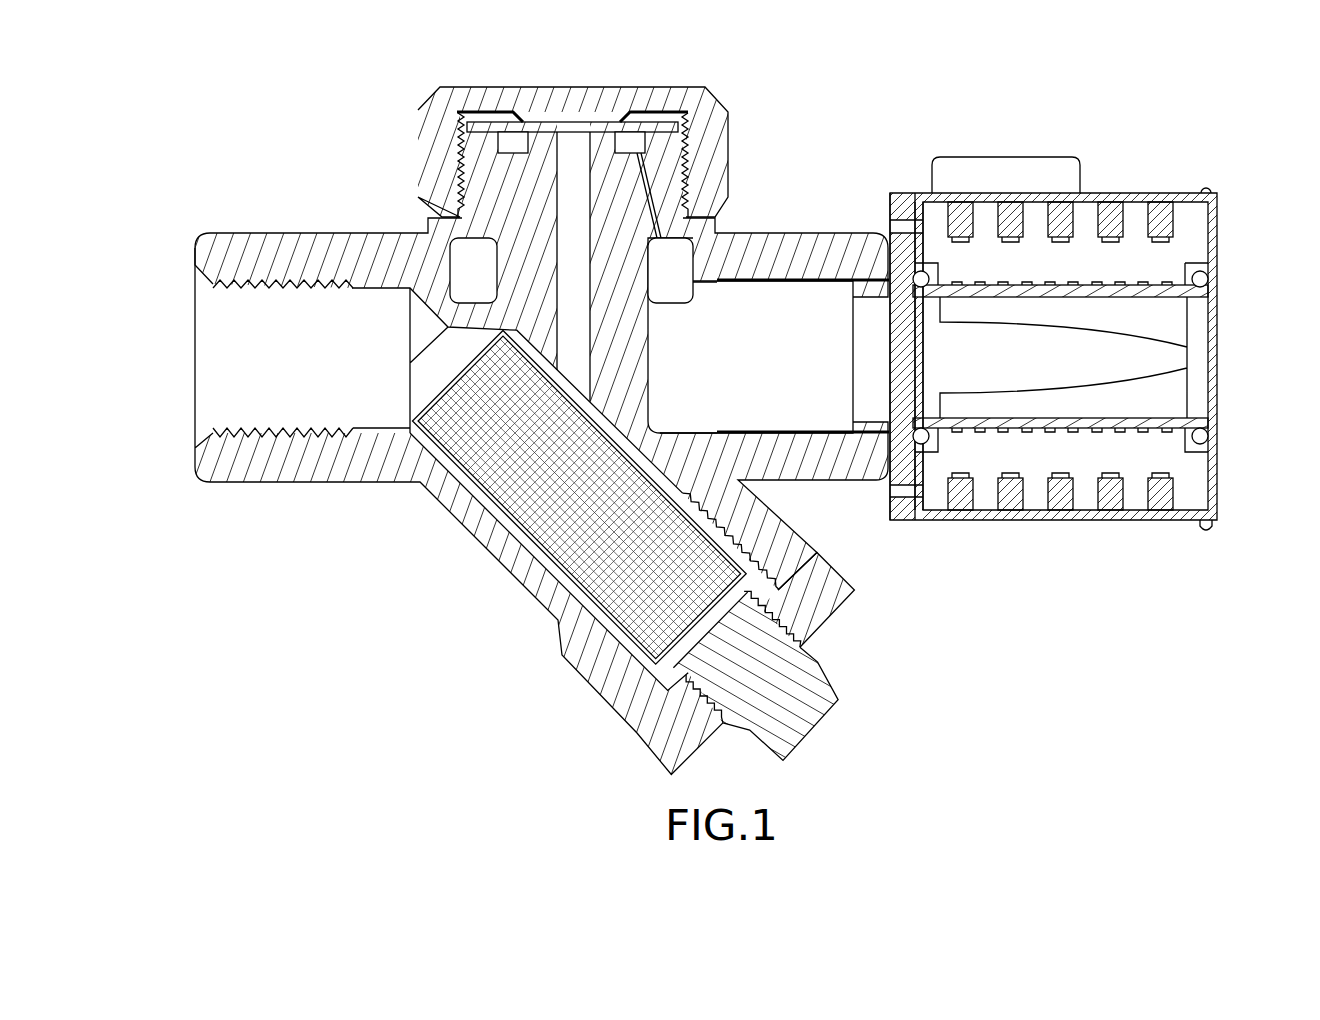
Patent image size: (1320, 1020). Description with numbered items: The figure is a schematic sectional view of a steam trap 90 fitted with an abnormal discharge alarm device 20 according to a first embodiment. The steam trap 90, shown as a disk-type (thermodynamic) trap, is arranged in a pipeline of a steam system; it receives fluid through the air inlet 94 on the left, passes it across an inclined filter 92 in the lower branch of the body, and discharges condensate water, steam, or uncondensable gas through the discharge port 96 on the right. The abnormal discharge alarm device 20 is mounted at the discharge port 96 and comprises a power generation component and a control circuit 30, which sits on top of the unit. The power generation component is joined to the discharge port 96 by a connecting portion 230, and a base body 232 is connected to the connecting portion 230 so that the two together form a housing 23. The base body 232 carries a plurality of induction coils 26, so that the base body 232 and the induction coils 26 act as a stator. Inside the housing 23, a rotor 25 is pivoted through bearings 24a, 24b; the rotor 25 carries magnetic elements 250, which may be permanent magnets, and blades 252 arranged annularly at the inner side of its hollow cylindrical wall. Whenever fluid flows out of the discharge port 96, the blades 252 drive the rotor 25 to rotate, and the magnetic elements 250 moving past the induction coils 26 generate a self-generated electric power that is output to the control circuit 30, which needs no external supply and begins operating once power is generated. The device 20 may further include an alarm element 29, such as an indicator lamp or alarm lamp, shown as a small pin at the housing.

The steam trap 90 is at (770, 188).
The filter 92 is at (498, 517).
The air inlet 94 is at (238, 357).
The discharge port 96 is at (793, 298).
The abnormal discharge alarm device 20 is at (1071, 321).
The housing 23 is at (915, 296).
The connecting portion 230 is at (902, 210).
The base body 232 is at (933, 313).
The control circuit 30 is at (1048, 170).
The rotor 25 is at (1132, 292).
The induction coils 26 is at (1177, 223).
The alarm element 29 is at (1206, 188).
The magnetic elements 250 is at (1170, 277).
The blades 252 is at (1173, 315).
The bearing 24a is at (925, 442).
The bearing 24b is at (1210, 437).